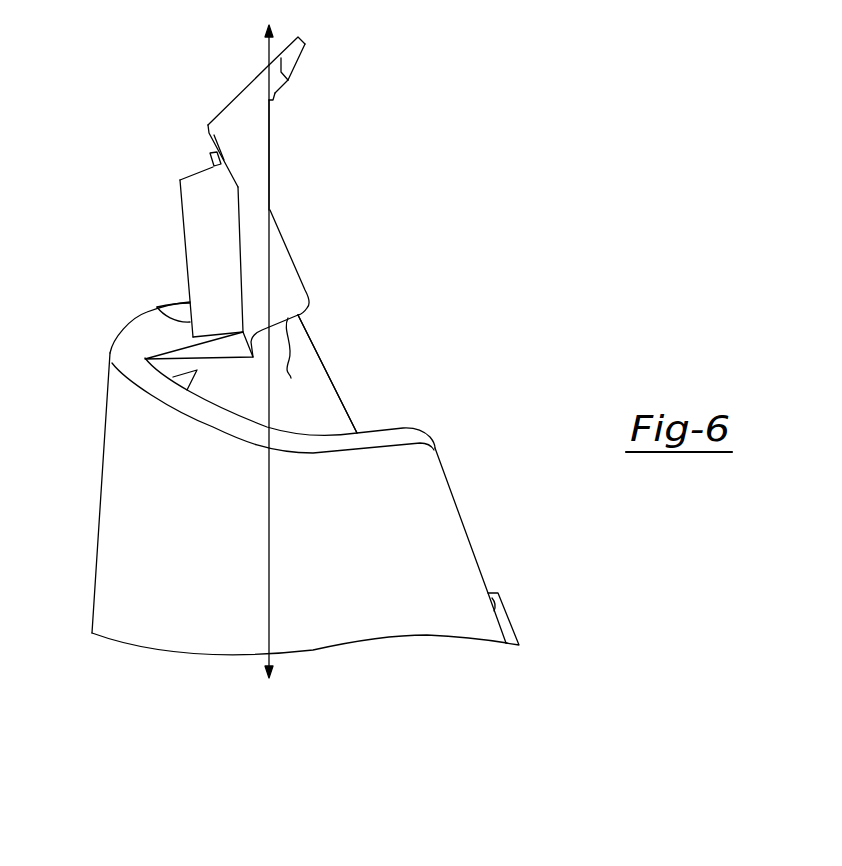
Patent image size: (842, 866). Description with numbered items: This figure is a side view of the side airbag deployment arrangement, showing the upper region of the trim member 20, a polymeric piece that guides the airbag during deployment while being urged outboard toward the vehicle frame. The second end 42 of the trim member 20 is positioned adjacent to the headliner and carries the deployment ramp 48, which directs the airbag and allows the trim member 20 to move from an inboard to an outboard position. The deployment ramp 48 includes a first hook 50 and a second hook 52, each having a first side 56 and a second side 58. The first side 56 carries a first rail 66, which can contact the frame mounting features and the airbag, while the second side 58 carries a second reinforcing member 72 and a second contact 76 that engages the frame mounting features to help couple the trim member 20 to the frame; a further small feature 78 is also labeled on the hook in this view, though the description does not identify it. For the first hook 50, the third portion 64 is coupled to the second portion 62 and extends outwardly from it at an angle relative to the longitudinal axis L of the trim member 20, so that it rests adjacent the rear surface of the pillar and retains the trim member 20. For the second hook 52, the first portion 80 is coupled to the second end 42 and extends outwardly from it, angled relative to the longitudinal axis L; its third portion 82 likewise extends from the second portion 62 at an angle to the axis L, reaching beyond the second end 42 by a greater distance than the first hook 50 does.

The longitudinal axis L is at (268, 66).
The trim member 20 is at (490, 522).
The second end 42 is at (82, 364).
The deployment ramp 48 is at (439, 317).
The first hook 50 is at (283, 111).
The second hook 52 is at (339, 271).
The first side 56 is at (187, 128).
The second side 58 is at (368, 92).
The second portion 62 is at (304, 254).
The third portion 64 is at (279, 101).
The first rail 66 is at (170, 323).
The second reinforcing member 72 is at (270, 174).
The second contact 76 is at (300, 313).
The detent 78 is at (212, 164).
The first portion 80 is at (296, 365).
The third portion 82 is at (288, 85).